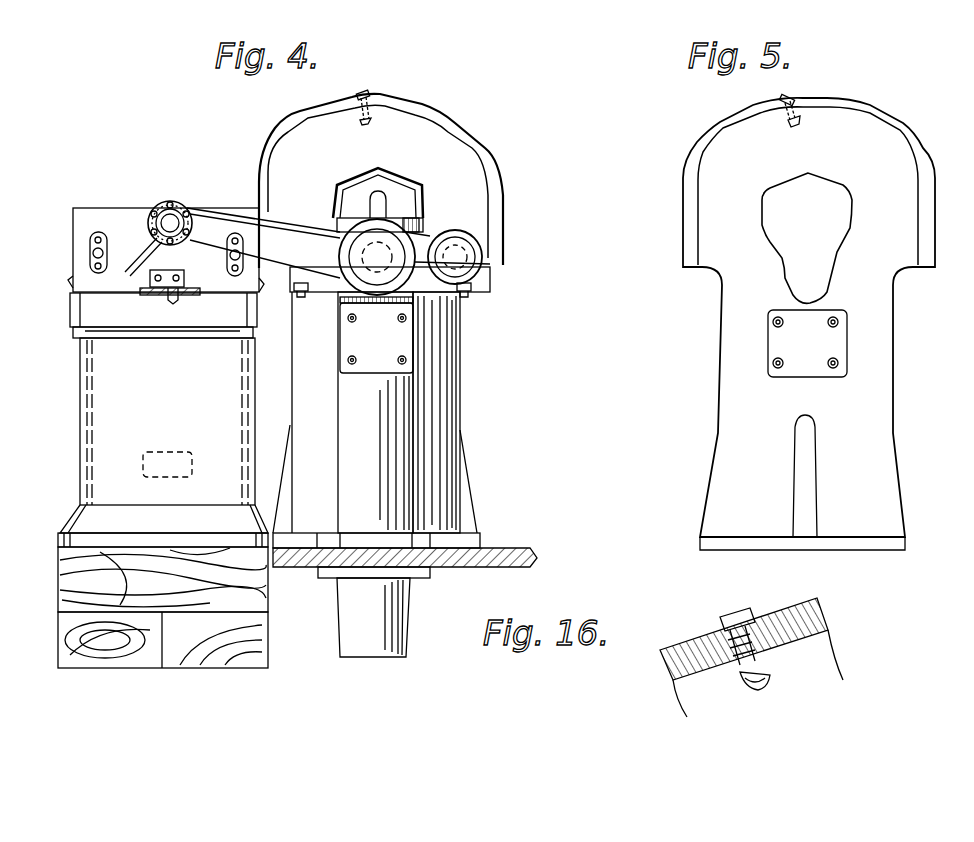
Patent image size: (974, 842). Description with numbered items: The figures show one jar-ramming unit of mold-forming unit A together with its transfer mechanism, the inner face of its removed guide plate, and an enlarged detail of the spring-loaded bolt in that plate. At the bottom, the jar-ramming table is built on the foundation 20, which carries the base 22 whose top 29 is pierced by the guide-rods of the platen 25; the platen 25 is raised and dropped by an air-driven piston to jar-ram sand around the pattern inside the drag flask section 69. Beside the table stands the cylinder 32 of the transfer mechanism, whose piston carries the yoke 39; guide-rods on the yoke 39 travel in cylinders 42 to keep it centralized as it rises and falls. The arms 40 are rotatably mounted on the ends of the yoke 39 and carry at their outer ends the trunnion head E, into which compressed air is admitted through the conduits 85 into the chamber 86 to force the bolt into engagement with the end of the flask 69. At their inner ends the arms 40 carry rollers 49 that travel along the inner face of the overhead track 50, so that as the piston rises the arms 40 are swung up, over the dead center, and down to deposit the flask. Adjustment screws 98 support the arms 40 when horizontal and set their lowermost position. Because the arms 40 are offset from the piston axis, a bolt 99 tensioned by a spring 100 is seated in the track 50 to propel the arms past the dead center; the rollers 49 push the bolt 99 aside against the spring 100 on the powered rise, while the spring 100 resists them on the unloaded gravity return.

In FIG. 4, the foundation 20 is at (97, 558).
In FIG. 4, the base 22 is at (103, 517).
In FIG. 4, the platen 25 is at (163, 315).
In FIG. 4, the top of the base 29 is at (167, 421).
In FIG. 4, the mold-forming unit A is at (172, 418).
In FIG. 4, the trunnion head E is at (146, 183).
In FIG. 4, the cylinder 32 is at (175, 219).
In FIG. 4, the yoke 39 is at (405, 215).
In FIG. 4, the arms 40 is at (207, 223).
In FIG. 4, the cylinders 42 is at (405, 474).
In FIG. 4, the rollers 49 is at (478, 237).
In FIG. 4, the overhead track 50 is at (312, 155).
In FIG. 5, the overhead track 50 is at (737, 173).
In FIG. 16, the overhead track 50 is at (820, 638).
In FIG. 4, the flask 69 is at (83, 225).
In FIG. 4, the conduits 85 is at (137, 256).
In FIG. 4, the chamber 86 is at (153, 209).
In FIG. 4, the adjustment screws 98 is at (466, 300).
In FIG. 4, the bolts 99 is at (366, 112).
In FIG. 5, the bolts 99 is at (793, 128).
In FIG. 16, the bolts 99 is at (752, 690).
In FIG. 16, the springs 100 is at (762, 664).